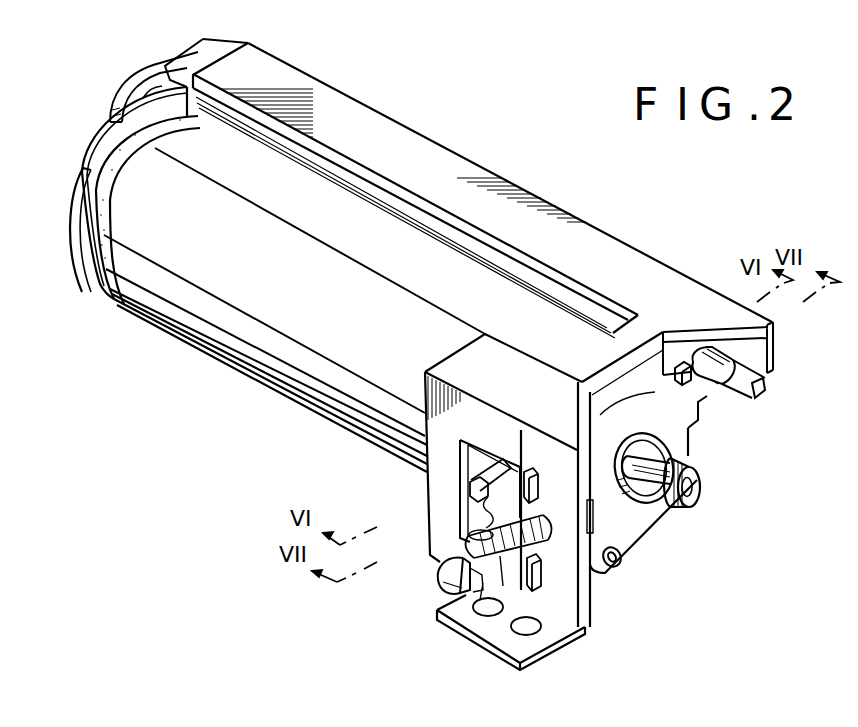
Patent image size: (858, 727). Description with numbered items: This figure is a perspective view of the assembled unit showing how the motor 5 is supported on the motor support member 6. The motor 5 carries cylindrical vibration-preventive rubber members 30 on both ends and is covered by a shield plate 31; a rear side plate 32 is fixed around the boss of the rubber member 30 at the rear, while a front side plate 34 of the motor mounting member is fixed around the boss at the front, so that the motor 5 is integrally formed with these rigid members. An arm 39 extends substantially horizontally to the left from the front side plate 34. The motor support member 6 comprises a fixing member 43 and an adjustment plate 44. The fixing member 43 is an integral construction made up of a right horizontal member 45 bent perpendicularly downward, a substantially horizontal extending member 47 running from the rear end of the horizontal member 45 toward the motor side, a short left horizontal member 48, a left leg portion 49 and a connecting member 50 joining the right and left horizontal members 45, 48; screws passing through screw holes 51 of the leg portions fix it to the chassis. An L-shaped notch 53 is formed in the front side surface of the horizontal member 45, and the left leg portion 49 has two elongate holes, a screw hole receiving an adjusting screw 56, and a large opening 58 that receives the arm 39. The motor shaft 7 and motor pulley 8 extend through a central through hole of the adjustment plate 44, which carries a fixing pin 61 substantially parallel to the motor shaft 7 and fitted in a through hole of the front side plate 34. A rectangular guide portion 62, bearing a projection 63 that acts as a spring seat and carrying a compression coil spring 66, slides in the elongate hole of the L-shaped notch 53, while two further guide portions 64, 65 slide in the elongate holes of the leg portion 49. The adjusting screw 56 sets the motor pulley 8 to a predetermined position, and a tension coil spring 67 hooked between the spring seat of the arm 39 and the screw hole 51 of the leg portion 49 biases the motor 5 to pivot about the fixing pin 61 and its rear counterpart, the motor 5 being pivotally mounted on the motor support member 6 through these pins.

The motor 5 is at (246, 380).
The motor support member 6 is at (420, 96).
The motor shaft 7 is at (628, 503).
The motor pulley 8 is at (660, 500).
The vibration-preventive rubber member 30 is at (150, 208).
The shield plate 31 is at (174, 318).
The rear side plate 32 is at (92, 160).
The front side plate 34 is at (632, 352).
The arm 39 is at (505, 458).
The fixing member 43 is at (488, 168).
The adjustment plate 44 is at (694, 430).
The right horizontal member 45 is at (326, 104).
The extending member 47 is at (172, 62).
The left horizontal member 48 is at (436, 368).
The left leg portion 49 is at (406, 455).
The connecting member 50 is at (620, 312).
The screw hole 51 is at (536, 622).
The L-shaped notch 53 is at (766, 387).
The adjusting screw 56 is at (438, 578).
The large opening 58 is at (470, 452).
The fixing pin 61 is at (622, 568).
The guide portion 62 is at (737, 360).
The projection 63 is at (683, 366).
The guide portion 64 is at (540, 483).
The guide portion 65 is at (548, 572).
The compression coil spring 66 is at (717, 398).
The tension coil spring 67 is at (470, 548).